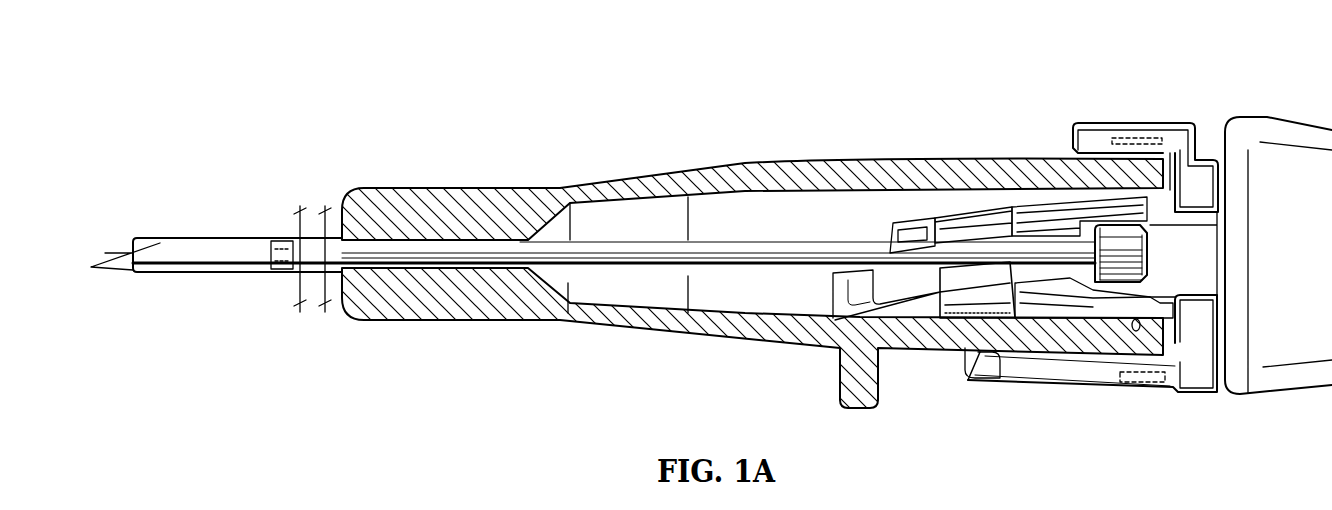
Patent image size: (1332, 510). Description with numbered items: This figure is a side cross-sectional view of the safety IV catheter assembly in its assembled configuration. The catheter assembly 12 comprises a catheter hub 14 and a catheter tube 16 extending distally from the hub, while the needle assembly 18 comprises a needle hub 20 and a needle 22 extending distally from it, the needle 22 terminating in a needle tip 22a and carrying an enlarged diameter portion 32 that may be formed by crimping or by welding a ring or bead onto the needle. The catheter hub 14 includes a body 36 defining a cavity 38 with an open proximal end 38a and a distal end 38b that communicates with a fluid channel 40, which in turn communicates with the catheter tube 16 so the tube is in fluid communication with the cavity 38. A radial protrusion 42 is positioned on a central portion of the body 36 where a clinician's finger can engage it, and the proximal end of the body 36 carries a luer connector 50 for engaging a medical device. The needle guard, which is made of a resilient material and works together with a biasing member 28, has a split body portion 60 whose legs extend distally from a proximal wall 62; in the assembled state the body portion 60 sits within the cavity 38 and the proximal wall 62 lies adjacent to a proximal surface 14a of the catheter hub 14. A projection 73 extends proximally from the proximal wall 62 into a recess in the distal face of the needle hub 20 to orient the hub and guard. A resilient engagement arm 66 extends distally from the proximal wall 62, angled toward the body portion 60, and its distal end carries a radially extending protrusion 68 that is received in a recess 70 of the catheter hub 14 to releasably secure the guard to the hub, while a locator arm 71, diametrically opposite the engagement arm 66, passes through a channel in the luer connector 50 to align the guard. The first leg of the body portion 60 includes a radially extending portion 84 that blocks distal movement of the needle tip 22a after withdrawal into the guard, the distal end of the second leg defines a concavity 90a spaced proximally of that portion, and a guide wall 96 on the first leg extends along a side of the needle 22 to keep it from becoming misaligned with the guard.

The catheter assembly 12 is at (366, 186).
The catheter hub 14 is at (666, 176).
The proximal surface 14a is at (1197, 390).
The catheter tube 16 is at (212, 235).
The needle assembly 18 is at (1270, 400).
The needle hub 20 is at (1265, 130).
The needle 22 is at (1221, 254).
The needle tip 22a is at (114, 270).
The biasing member 28 is at (958, 218).
The enlarged diameter portion 32 is at (278, 267).
The body 36 is at (840, 162).
The cavity 38 is at (756, 285).
The open proximal end 38a is at (1134, 331).
The distal end 38b is at (573, 300).
The fluid channel 40 is at (418, 254).
The radial protrusion 42 is at (852, 410).
The luer connector 50 is at (1150, 390).
The split body portion 60 is at (1048, 190).
The proximal wall 62 is at (1200, 336).
The resilient engagement arm 66 is at (1052, 386).
The radially extending protrusion 68 is at (995, 387).
The recess 70 is at (962, 342).
The locator arm 71 is at (1128, 133).
The projection 73 is at (1223, 364).
The radially extending portion 84 is at (856, 290).
The concavity 90a is at (905, 232).
The guide wall 96 is at (992, 216).